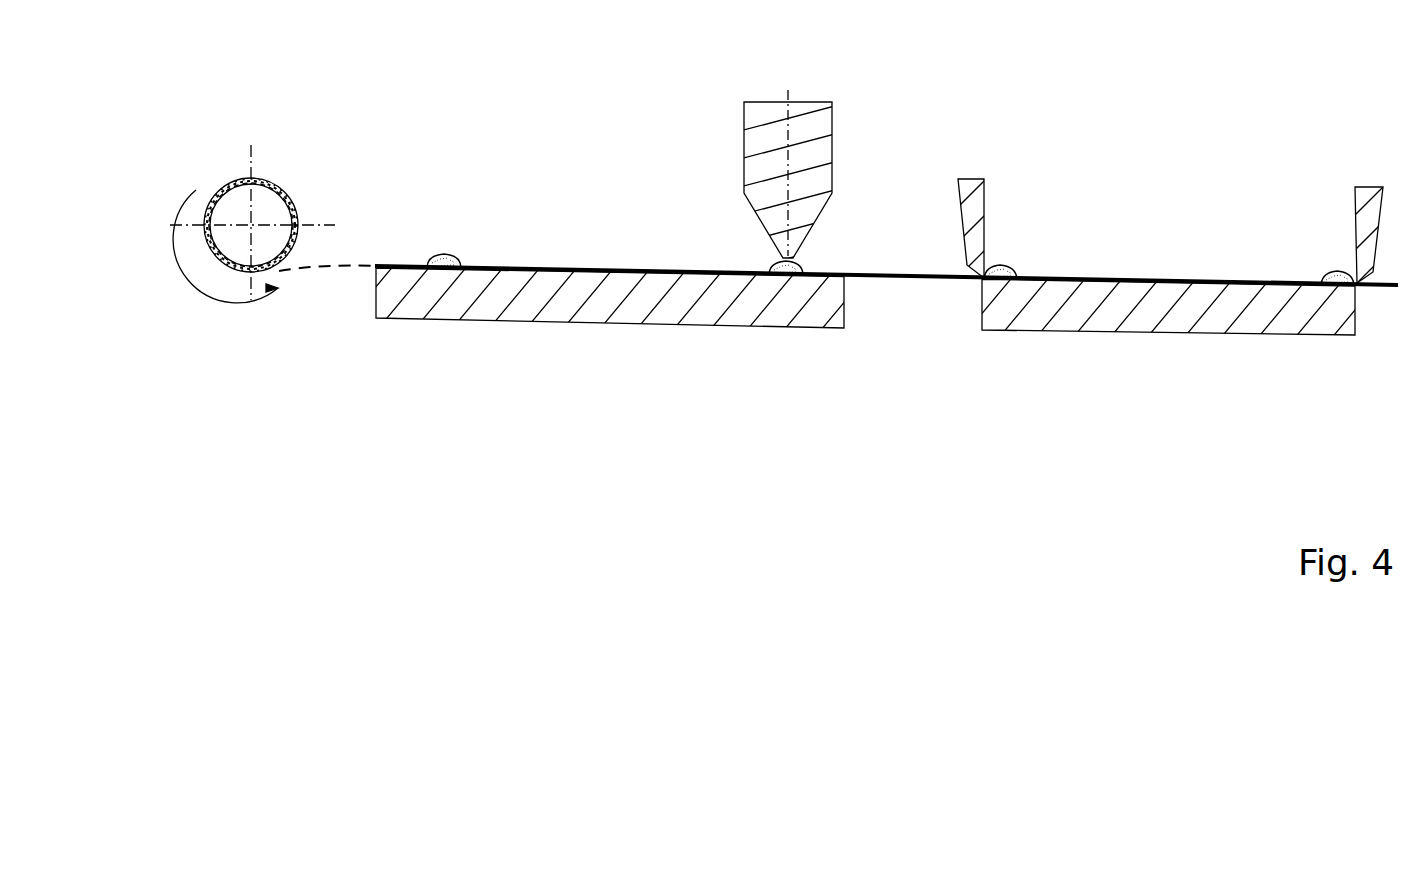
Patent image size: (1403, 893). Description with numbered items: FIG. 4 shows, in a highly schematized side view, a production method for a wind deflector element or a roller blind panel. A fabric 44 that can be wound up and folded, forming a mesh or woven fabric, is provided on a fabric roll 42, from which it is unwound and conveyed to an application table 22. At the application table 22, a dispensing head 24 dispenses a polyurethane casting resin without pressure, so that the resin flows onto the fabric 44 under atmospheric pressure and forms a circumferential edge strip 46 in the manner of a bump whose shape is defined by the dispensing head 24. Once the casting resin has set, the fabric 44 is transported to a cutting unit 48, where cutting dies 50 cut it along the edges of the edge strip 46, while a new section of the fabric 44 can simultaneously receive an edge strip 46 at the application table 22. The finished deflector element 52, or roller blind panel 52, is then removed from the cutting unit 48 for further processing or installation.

The application table 22 is at (709, 312).
The dispensing head 24 is at (808, 110).
The fabric roll 42 is at (275, 207).
The fabric 44 is at (305, 268).
The edge strip 46 is at (440, 252).
The cutting unit 48 is at (1028, 320).
The cutting dies 50 is at (978, 195).
The deflector element 52 is at (1188, 280).